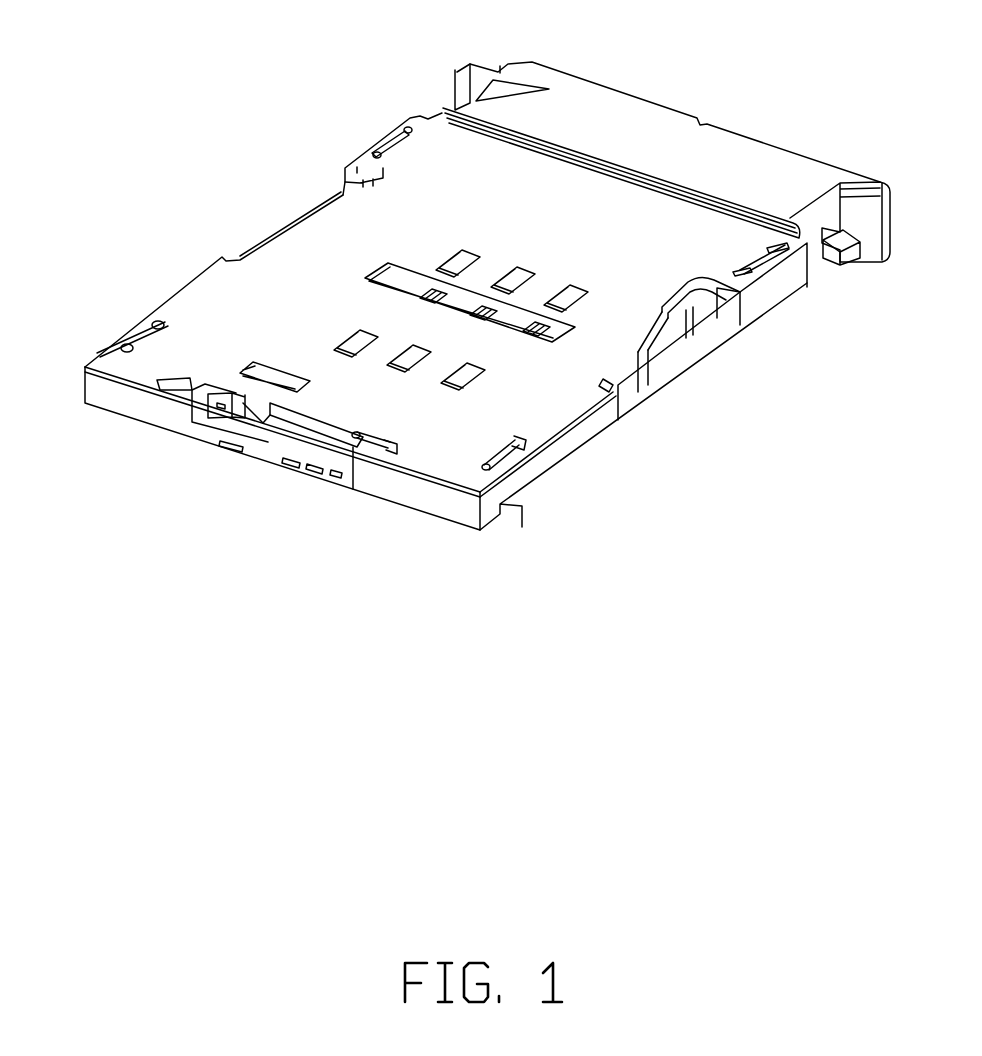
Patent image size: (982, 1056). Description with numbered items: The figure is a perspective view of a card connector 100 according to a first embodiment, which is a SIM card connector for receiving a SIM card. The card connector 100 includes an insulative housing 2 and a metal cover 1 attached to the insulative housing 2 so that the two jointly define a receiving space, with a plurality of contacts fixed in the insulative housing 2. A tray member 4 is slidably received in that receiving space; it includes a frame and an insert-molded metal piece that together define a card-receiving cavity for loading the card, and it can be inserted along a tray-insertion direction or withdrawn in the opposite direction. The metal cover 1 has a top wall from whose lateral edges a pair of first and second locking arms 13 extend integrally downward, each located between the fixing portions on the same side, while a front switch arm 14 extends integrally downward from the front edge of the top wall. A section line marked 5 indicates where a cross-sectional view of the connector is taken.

The card connector 100 is at (247, 183).
The metal cover 1 is at (415, 172).
The insulative housing 2 is at (422, 492).
The tray member 4 is at (627, 128).
The section line 5- 5 is at (522, 565).
The first and second locking arms 13 is at (666, 355).
The front switch arm 14 is at (300, 428).